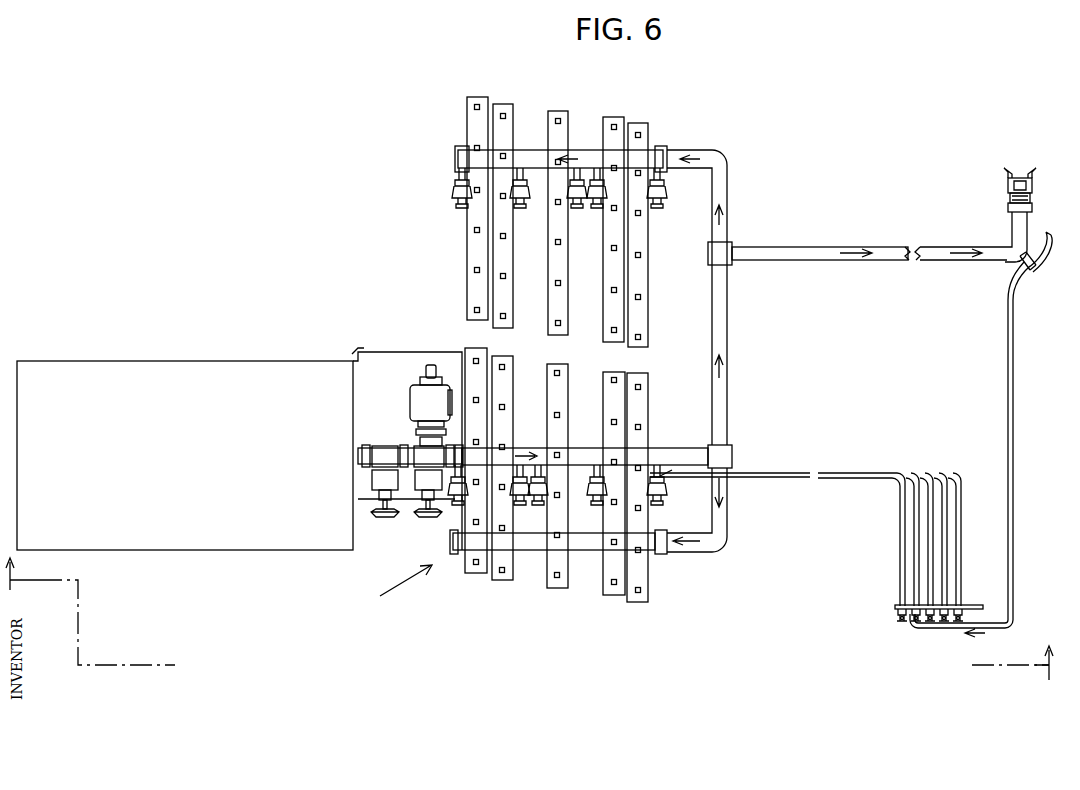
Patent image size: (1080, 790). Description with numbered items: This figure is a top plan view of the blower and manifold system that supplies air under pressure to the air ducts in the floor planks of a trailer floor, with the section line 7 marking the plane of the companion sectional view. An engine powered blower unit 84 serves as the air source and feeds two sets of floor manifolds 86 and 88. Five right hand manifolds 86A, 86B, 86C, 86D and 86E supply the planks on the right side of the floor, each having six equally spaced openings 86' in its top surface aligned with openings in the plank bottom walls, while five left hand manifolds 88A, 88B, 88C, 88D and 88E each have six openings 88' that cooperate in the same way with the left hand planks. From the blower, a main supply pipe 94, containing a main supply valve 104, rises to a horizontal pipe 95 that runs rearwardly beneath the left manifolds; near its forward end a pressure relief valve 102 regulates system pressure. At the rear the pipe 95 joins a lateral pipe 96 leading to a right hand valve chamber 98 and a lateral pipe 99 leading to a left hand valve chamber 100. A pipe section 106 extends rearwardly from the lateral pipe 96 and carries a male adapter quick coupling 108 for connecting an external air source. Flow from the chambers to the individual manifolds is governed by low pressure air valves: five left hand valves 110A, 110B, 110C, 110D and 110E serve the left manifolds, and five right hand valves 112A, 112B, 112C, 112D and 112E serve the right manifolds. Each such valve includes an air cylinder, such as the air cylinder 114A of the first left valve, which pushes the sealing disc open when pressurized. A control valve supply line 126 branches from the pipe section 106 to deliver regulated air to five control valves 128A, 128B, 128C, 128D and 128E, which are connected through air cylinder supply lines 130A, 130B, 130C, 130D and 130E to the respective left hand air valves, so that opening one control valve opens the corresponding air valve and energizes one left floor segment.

The section line 7 is at (537, 619).
The engine powered blower unit 84 is at (224, 370).
The right hand floor manifolds 86 is at (398, 162).
The front right manifold 86A is at (476, 96).
The right hand floor manifold 86B is at (503, 103).
The right hand floor manifold 86C is at (558, 110).
The right hand floor manifold 86D is at (614, 116).
The right hand floor manifold 86E is at (640, 122).
The openings 86' is at (528, 221).
The left hand floor manifolds 88 is at (391, 588).
The left hand floor manifold 88A is at (475, 574).
The left hand floor manifold 88B is at (503, 581).
The left hand floor manifold 88C is at (557, 589).
The left hand floor manifold 88D is at (614, 596).
The left hand floor manifold 88E is at (640, 603).
The openings 88' is at (583, 394).
The pipe 94 is at (362, 452).
The horizontal pipe 95 is at (672, 448).
The horizontal pipe 96 is at (728, 192).
The right hand valve chamber 98 is at (526, 150).
The horizontal pipe 99 is at (728, 512).
The left hand valve chamber 100 is at (586, 551).
The pressure relief valve 102 is at (414, 403).
The main supply valve 104 is at (379, 520).
The pipe section 106 is at (832, 247).
The male adapter quick coupling 108 is at (996, 186).
The left hand low pressure air valve 110A is at (458, 506).
The left hand low pressure air valve 110B is at (526, 470).
The left hand low pressure air valve 110C is at (538, 545).
The left hand low pressure air valve 110D is at (601, 470).
The left hand low pressure air valve 110E is at (673, 504).
The right hand low pressure air valve 112A is at (447, 217).
The right hand low pressure air valve 112B is at (524, 212).
The right hand low pressure air valve 112C is at (577, 212).
The right hand low pressure air valve 112D is at (595, 182).
The right hand low pressure air valve 112E is at (671, 197).
The air cylinder 114A is at (448, 470).
The control valve supply line 126 is at (1007, 320).
The control valve 128A is at (905, 608).
The control valve 128B is at (918, 608).
The control valve 128C is at (934, 606).
The control valve 128D is at (948, 606).
The control valve 128E is at (962, 608).
The air cylinder supply line 130A is at (900, 492).
The air cylinder supply line 130B is at (916, 505).
The air cylinder supply line 130C is at (930, 525).
The air cylinder supply line 130D is at (945, 484).
The air cylinder supply line 130E is at (961, 504).